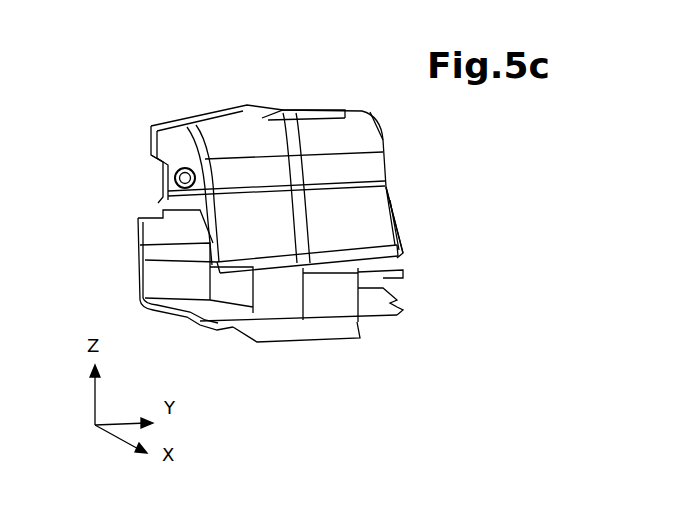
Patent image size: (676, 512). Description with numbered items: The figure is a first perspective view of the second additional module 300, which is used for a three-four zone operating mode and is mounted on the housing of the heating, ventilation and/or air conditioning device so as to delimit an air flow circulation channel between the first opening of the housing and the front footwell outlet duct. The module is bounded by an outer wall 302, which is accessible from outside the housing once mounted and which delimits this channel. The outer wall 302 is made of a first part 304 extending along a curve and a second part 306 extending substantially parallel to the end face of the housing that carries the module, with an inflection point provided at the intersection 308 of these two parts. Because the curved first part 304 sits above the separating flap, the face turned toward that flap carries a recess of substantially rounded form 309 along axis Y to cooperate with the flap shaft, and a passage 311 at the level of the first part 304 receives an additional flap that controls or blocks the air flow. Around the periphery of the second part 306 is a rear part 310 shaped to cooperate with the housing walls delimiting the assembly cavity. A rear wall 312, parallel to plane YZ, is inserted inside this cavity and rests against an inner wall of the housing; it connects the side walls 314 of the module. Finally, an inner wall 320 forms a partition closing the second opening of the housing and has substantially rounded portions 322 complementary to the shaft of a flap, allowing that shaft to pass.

The second additional module 300 is at (343, 95).
The outer wall 302 is at (285, 118).
The first part 304 is at (222, 130).
The second part 306 is at (385, 226).
The intersection 308 is at (373, 187).
The recess of substantially rounded form 309 is at (162, 172).
The rear part 310 is at (398, 262).
The passage 311 is at (165, 190).
The rear wall 312 is at (330, 302).
The side walls 314 is at (243, 293).
The inner wall 320 is at (160, 276).
The substantially rounded portions 322 is at (137, 250).